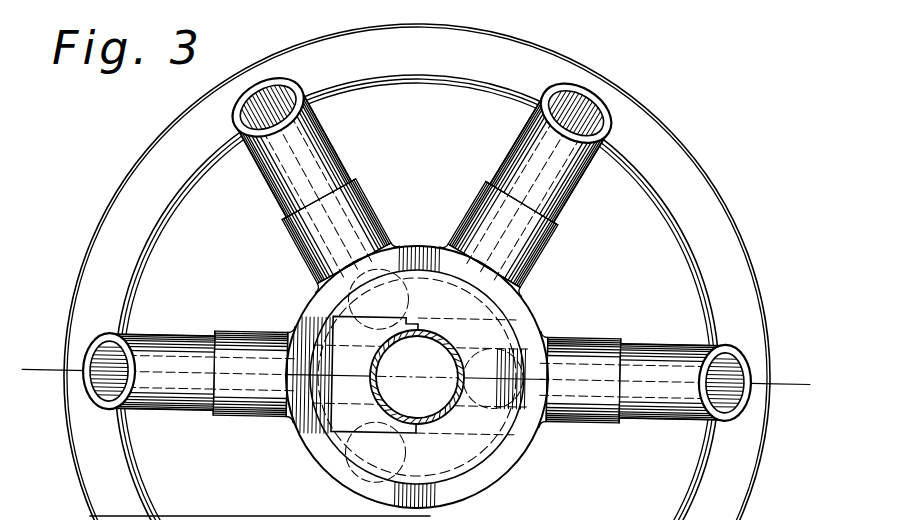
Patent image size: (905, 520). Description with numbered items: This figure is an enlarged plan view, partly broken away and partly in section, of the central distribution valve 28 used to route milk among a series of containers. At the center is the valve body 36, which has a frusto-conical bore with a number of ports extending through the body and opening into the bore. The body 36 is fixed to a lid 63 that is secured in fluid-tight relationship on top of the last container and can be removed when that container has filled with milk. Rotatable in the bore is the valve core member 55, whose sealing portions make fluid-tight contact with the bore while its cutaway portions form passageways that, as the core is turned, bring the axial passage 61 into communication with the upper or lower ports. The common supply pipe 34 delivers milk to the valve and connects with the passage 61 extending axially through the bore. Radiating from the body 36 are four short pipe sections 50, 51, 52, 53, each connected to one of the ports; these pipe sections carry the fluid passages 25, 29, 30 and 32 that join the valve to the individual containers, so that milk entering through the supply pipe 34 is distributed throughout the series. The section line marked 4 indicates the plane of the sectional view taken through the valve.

The distribution valve 28 is at (695, 131).
The lid 63 is at (665, 262).
The section line 4- 4 is at (792, 394).
The passage 25 is at (185, 388).
The second fluid passage 29 is at (283, 167).
The passage 30 is at (530, 152).
The passage or tubing 32 is at (662, 352).
The short pipe section 50 is at (597, 352).
The short pipe section 51 is at (497, 212).
The short pipe section 52 is at (318, 243).
The short pipe section 53 is at (258, 415).
The valve body 36 is at (520, 443).
The valve core member 55 is at (462, 455).
The common supply pipe 34 is at (432, 352).
The passage 61 is at (448, 407).